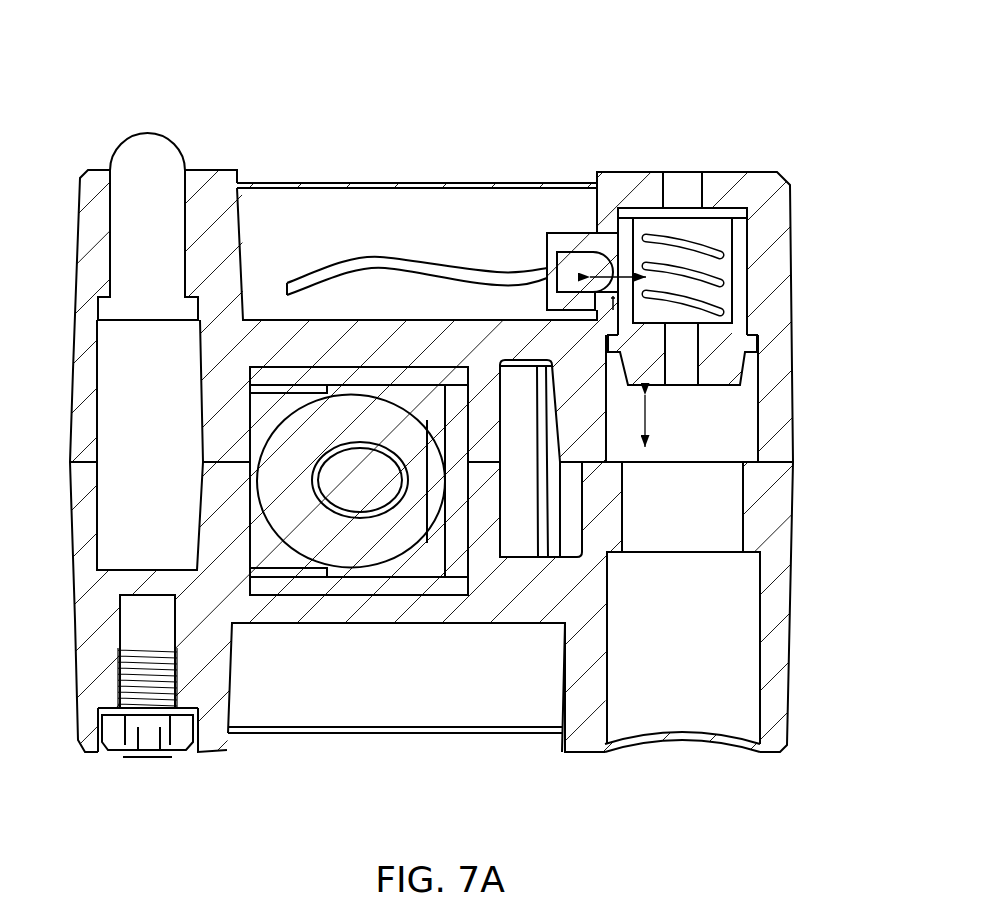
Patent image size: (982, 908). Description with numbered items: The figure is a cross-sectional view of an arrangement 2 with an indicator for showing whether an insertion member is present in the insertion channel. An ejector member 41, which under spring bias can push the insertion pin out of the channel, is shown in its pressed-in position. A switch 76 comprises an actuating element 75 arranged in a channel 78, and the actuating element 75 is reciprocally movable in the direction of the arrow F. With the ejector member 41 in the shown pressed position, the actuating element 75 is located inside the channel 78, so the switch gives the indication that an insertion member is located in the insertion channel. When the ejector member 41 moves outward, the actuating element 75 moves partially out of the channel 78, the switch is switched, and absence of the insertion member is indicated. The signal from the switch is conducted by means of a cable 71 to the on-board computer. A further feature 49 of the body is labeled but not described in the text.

The tensioner assembly 2 is at (578, 118).
The cable 71 is at (352, 257).
The actuating element 75 is at (601, 242).
The switch 76 is at (589, 250).
The channel 78 is at (596, 263).
The ejector member 41 is at (745, 374).
The lower cavity 49 is at (760, 654).